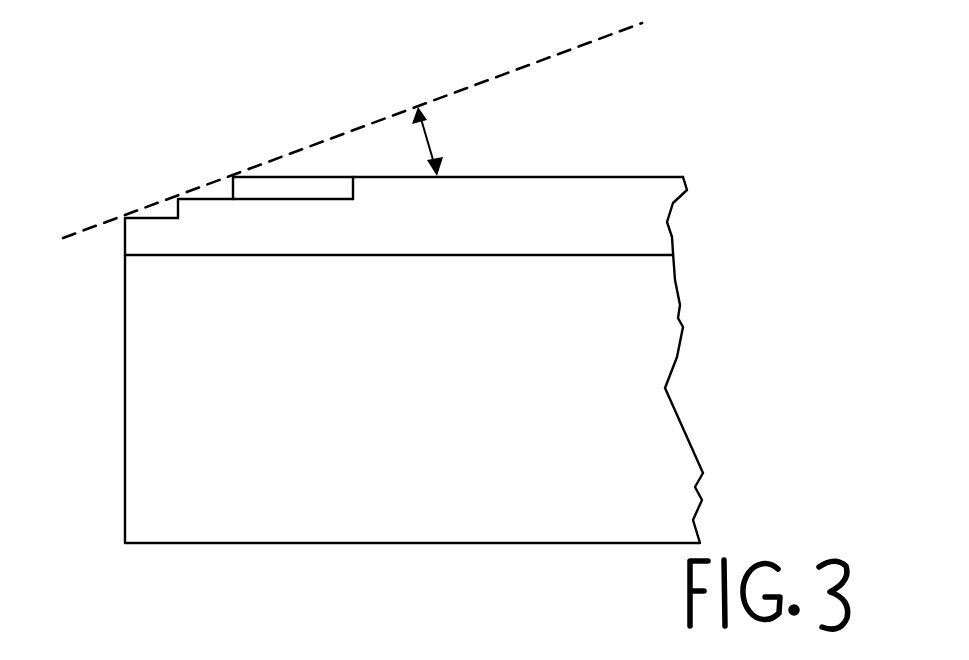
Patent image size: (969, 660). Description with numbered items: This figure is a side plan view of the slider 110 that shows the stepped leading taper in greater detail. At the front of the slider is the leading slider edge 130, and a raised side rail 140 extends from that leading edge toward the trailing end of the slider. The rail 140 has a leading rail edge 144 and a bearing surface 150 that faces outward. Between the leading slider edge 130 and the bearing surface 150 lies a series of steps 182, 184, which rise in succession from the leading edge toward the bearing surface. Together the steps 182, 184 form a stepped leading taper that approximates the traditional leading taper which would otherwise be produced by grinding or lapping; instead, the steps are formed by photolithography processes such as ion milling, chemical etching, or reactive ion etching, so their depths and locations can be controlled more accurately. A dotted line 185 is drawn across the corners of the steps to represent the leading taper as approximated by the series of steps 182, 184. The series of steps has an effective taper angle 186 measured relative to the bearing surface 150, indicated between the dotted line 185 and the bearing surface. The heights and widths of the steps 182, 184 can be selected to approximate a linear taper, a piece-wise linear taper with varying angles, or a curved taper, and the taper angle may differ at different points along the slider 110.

The slider 110 is at (708, 154).
The leading slider edge 130 is at (125, 375).
The raised side rail 140 is at (673, 205).
The bearing surface 150 is at (578, 176).
The leading rail edge 144 is at (229, 175).
The step 182 is at (148, 198).
The step 184 is at (200, 181).
The dotted line 185 is at (497, 78).
The effective taper angle 186 is at (428, 136).